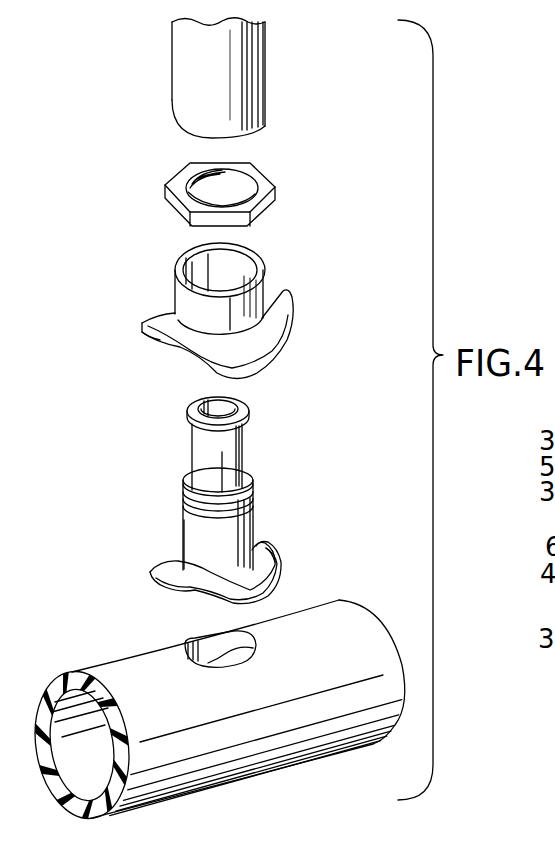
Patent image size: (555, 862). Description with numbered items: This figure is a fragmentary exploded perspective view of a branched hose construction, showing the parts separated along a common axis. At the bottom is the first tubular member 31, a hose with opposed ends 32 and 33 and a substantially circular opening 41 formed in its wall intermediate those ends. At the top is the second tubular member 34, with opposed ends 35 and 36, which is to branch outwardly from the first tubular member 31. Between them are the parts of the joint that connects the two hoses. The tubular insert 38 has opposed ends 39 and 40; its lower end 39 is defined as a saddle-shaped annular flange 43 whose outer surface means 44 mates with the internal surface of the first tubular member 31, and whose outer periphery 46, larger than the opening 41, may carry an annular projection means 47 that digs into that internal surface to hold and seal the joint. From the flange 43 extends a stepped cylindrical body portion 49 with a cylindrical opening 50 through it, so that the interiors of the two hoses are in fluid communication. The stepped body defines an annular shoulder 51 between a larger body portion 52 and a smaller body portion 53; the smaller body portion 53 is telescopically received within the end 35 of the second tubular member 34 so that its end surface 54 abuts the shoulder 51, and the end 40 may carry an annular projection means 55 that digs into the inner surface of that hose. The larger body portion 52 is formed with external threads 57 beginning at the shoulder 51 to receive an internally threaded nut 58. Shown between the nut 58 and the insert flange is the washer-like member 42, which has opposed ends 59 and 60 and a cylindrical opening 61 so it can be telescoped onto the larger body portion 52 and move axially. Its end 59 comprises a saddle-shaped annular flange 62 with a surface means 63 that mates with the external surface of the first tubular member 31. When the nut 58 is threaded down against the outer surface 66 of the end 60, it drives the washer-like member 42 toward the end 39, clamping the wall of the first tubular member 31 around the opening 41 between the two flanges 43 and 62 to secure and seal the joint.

The first tubular member 31 is at (211, 693).
The end of first tubular member 32 is at (68, 676).
The end of first tubular member 33 is at (398, 722).
The second tubular member 34 is at (217, 89).
The end of second tubular member 35 is at (190, 122).
The end of second tubular member 36 is at (173, 30).
The tubular insert 38 is at (229, 516).
The end of tubular insert 39 is at (182, 550).
The end of tubular insert 40 is at (217, 436).
The opening 41 is at (215, 668).
The washer-like member 42 is at (172, 318).
The annular flange 43 is at (228, 590).
The outer surface means 44 is at (220, 581).
The outer periphery 46 is at (157, 575).
The annular projection means 47 is at (278, 568).
The stepped cylindrical body portion 49 is at (184, 520).
The cylindrical opening 50 is at (242, 403).
The annular shoulder 51 is at (245, 472).
The larger body portion 52 is at (265, 528).
The smaller body portion 53 is at (192, 447).
The end surface 54 is at (258, 128).
The annular projection means 55 is at (190, 410).
The external threads 57 is at (185, 494).
The nut 58 is at (272, 178).
The end of washer-like member 59 is at (217, 326).
The end of washer-like member 60 is at (225, 276).
The cylindrical opening 61 is at (185, 262).
The annular flange 62 is at (192, 356).
The surface means 63 is at (158, 344).
The outer surface 66 is at (250, 252).